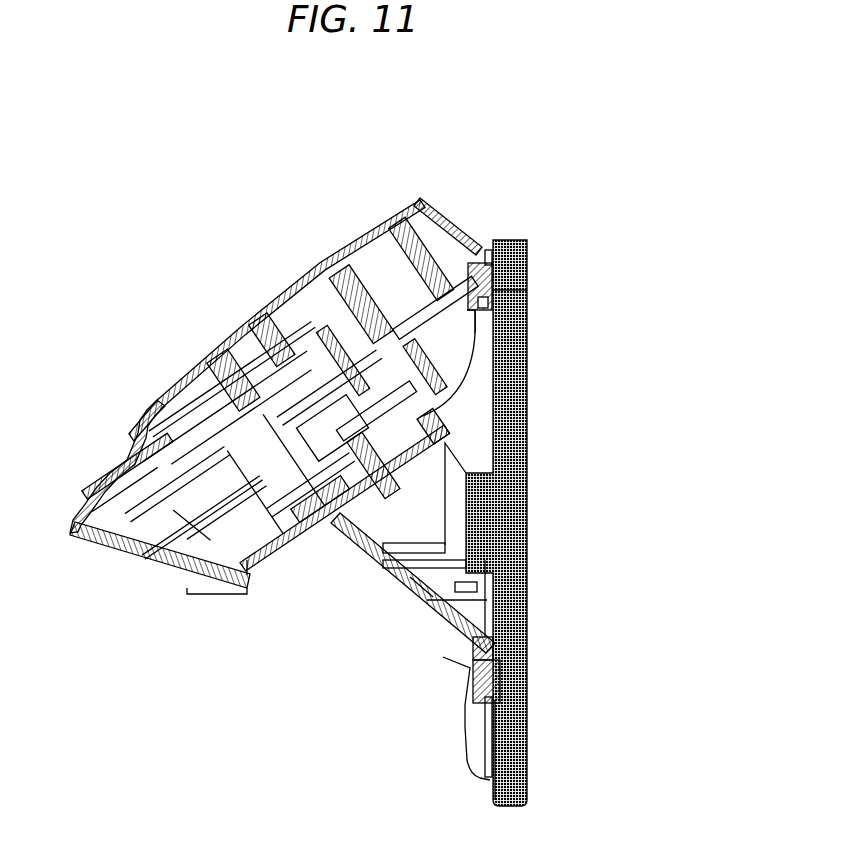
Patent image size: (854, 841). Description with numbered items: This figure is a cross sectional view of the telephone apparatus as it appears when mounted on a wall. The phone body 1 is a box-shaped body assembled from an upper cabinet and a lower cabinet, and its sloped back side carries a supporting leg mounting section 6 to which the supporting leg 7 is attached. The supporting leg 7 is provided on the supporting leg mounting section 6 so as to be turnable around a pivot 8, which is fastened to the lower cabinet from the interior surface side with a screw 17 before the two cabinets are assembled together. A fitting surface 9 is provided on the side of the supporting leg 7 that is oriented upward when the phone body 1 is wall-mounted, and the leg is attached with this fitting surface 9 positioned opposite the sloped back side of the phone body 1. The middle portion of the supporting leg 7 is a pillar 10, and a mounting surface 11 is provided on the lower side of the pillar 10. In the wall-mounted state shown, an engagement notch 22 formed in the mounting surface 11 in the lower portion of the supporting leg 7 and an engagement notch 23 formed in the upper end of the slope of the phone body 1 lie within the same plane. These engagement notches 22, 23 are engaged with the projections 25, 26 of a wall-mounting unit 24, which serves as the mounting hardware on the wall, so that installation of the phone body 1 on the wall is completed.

The phone body 1 is at (390, 213).
The supporting leg mounting section 6 is at (347, 508).
The supporting leg 7 is at (417, 618).
The pivot 8 is at (447, 443).
The fitting surface 9 is at (393, 460).
The pillar 10 is at (383, 572).
The mounting surface 11 is at (510, 745).
The screw 17 is at (248, 330).
The engagement notch 22 is at (498, 700).
The engagement notch 23 is at (488, 250).
The wall-mounting unit 24 is at (527, 320).
The projection 25 is at (524, 262).
The projection 26 is at (500, 678).